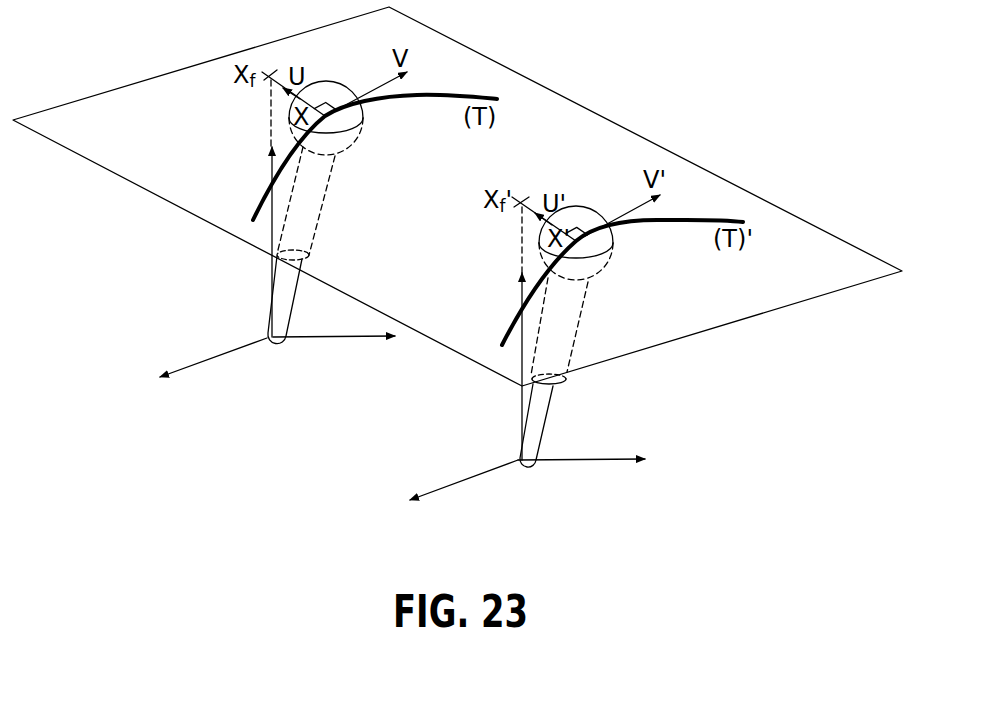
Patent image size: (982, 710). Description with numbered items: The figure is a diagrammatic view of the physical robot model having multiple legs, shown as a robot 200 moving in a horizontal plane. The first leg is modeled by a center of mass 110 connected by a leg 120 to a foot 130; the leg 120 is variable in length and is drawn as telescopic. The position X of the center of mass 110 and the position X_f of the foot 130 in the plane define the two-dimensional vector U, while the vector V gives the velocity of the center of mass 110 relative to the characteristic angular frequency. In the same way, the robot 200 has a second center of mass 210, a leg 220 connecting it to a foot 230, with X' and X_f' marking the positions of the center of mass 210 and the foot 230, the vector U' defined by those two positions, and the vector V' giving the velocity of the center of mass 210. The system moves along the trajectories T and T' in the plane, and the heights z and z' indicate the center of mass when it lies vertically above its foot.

The center of mass 110 is at (333, 88).
The leg 120 is at (302, 237).
The foot 130 is at (277, 345).
The robot 200 is at (158, 224).
The center of mass 210 is at (583, 215).
The leg 220 is at (558, 355).
The foot 230 is at (525, 465).